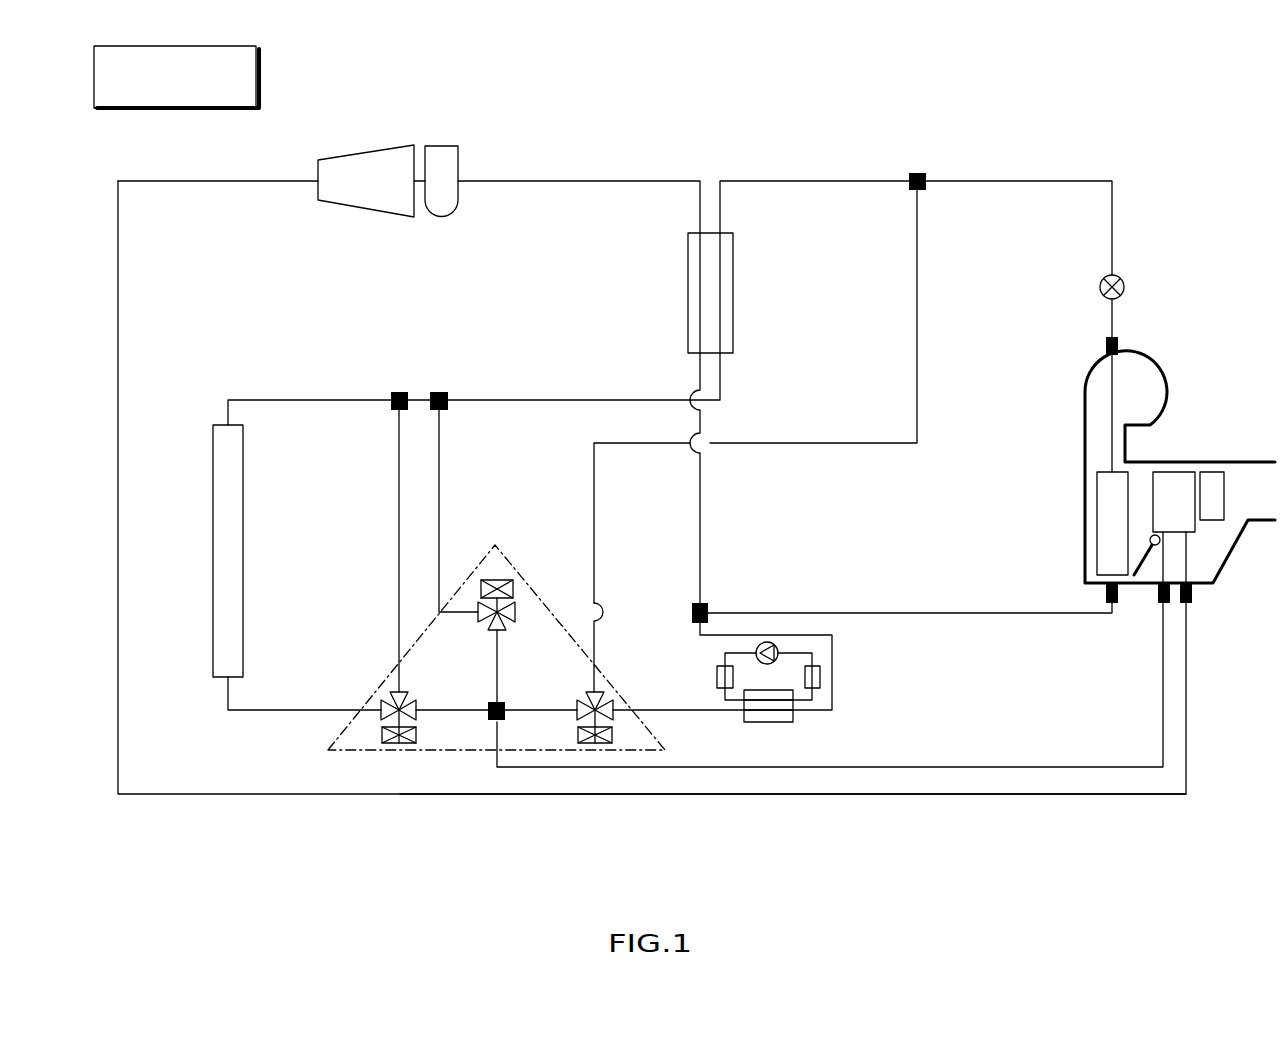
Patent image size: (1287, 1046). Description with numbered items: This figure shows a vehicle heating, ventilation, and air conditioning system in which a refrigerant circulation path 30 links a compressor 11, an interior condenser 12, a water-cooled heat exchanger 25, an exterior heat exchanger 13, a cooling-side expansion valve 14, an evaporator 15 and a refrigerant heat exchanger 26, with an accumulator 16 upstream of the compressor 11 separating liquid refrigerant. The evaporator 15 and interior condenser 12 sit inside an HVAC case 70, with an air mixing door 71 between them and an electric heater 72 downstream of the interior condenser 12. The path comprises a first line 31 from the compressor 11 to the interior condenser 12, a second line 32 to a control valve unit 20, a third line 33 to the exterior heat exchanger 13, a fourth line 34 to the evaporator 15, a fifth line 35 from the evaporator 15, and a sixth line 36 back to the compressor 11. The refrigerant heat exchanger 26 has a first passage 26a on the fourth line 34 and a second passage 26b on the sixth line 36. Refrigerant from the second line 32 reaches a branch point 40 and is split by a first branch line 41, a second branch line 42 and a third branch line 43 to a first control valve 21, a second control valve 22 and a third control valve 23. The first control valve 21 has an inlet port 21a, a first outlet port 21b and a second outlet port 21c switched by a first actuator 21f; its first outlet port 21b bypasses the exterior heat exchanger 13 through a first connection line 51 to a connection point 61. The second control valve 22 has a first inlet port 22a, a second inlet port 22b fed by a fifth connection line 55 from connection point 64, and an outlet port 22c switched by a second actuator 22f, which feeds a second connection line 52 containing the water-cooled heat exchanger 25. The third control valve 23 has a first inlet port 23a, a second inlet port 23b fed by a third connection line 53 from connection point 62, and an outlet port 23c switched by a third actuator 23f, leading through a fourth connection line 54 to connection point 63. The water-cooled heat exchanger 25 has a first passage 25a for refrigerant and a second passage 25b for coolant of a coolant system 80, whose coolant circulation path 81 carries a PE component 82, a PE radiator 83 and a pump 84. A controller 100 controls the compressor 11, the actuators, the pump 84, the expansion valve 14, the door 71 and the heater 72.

The controller 100 is at (258, 75).
The compressor 11 is at (357, 155).
The accumulator 16 is at (440, 146).
The sixth line 36 is at (585, 181).
The fourth line 34 is at (1046, 181).
The connection point 64 is at (917, 173).
The refrigerant heat exchanger 26 is at (734, 262).
The first passage 26a is at (722, 315).
The second passage 26b is at (700, 292).
The cooling-side expansion valve 14 is at (1125, 287).
The connection point 61 is at (399, 392).
The connection point 62 is at (440, 392).
The connection point 63 is at (708, 610).
The third connection line 53 is at (440, 430).
The fifth connection line 55 is at (645, 443).
The fourth connection line 54 is at (637, 612).
The first connection line 51 is at (399, 520).
The second connection line 52 is at (832, 680).
The exterior heat exchanger 13 is at (213, 568).
The evaporator 15 is at (1097, 522).
The interior condenser 12 is at (1172, 472).
The electric heater 72 is at (1210, 472).
The HVAC case 70 is at (1228, 556).
The air mixing door 71 is at (1144, 562).
The control valve unit 20 is at (342, 752).
The first control valve 21 is at (388, 734).
The inlet port 21a is at (420, 705).
The first outlet port 21b is at (404, 692).
The second outlet port 21c is at (385, 705).
The first actuator 21f is at (390, 743).
The second control valve 22 is at (599, 734).
The first inlet port 22a is at (573, 713).
The second inlet port 22b is at (600, 690).
The outlet port 22c is at (613, 717).
The second actuator 22f is at (587, 743).
The third control valve 23 is at (521, 579).
The first inlet port 23a is at (504, 630).
The second inlet port 23b is at (478, 600).
The outlet port 23c is at (517, 605).
The third actuator 23f is at (497, 580).
The branch point 40 is at (508, 708).
The first branch line 41 is at (443, 712).
The second branch line 42 is at (500, 765).
The third branch line 43 is at (497, 657).
The coolant system 80 is at (795, 659).
The coolant circulation path 81 is at (793, 705).
The PE component 82 is at (820, 680).
The PE radiator 83 is at (720, 690).
The pump 84 is at (775, 645).
The water-cooled heat exchanger 25 is at (798, 770).
The first passage 25a is at (785, 722).
The second passage 25b is at (762, 722).
The refrigerant circulation path 30 is at (983, 797).
The first line 31 is at (903, 796).
The second line 32 is at (1045, 767).
The third line 33 is at (262, 710).
The fifth line 35 is at (917, 612).